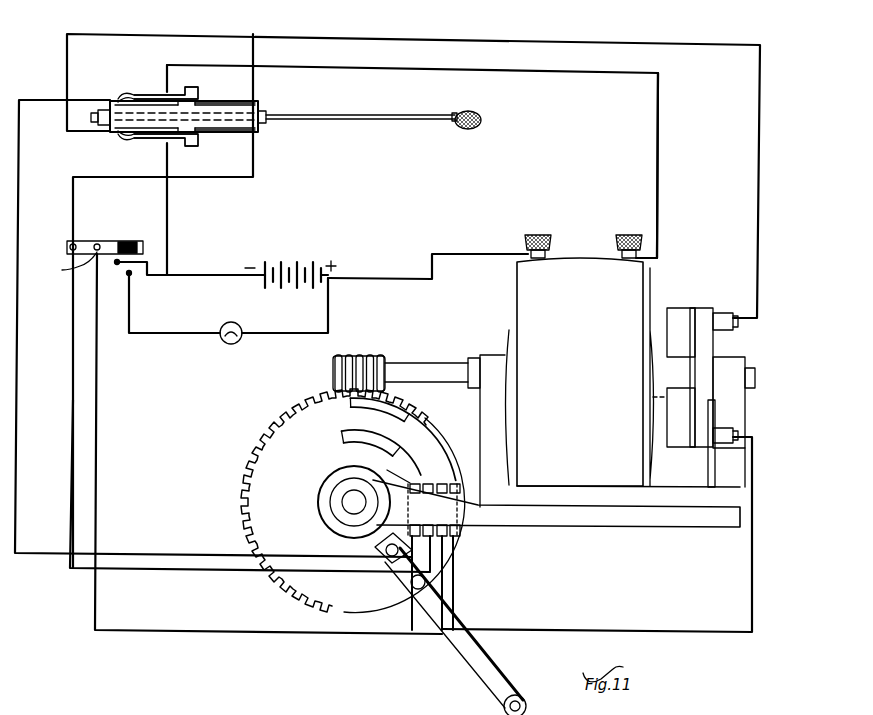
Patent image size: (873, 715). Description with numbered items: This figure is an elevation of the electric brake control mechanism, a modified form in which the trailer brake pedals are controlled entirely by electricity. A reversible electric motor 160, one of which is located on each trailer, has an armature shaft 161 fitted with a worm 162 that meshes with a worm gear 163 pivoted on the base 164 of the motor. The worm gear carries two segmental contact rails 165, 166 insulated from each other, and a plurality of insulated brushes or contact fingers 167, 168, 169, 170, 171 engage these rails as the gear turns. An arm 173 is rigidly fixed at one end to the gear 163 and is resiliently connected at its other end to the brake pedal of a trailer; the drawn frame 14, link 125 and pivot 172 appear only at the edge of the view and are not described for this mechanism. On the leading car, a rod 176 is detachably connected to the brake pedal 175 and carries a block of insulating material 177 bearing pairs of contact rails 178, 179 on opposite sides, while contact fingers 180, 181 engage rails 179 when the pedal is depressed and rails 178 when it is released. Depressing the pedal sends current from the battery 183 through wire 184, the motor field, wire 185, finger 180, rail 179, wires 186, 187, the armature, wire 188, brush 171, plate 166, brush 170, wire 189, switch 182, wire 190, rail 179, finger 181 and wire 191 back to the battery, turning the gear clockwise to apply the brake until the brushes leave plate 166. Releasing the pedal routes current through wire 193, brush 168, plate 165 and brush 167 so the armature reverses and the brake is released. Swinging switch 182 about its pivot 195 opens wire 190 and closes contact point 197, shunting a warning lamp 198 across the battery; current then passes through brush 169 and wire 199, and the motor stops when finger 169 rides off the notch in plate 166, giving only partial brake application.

The frame 14 is at (233, 708).
The link 125 is at (326, 706).
The reversible electric motor 160 is at (631, 361).
The armature shaft 161 is at (448, 362).
The worm 162 is at (362, 354).
The worm gear 163 is at (276, 421).
The base 164 is at (556, 527).
The segmental contact rail 165 is at (344, 437).
The segmental contact rail 166 is at (355, 405).
The brush 167 is at (388, 473).
The brush 168 is at (425, 482).
The brush 169 is at (435, 482).
The brush 170 is at (445, 485).
The brush 171 is at (461, 493).
The lever pivot 172 is at (369, 709).
The arm 173 is at (480, 655).
The brake pedal 175 is at (478, 105).
The rod 176 is at (385, 110).
The block of insulating material 177 is at (259, 110).
The contact rail 178 is at (123, 99).
The contact rail 179 is at (218, 104).
The contact finger 180 is at (152, 92).
The contact finger 181 is at (155, 143).
The switch 182 is at (100, 241).
The battery 183 is at (294, 265).
The wire 184 is at (390, 278).
The wire 185 is at (659, 143).
The wire 186 is at (255, 55).
The wire 187 is at (354, 34).
The wire 188 is at (668, 631).
The wire 189 is at (97, 482).
The wire 190 is at (73, 203).
The wire 191 is at (168, 230).
The wire 193 is at (42, 99).
The pivot 195 is at (65, 265).
The contact point 197 is at (120, 259).
The warning lamp 198 is at (243, 330).
The wire 199 is at (71, 393).